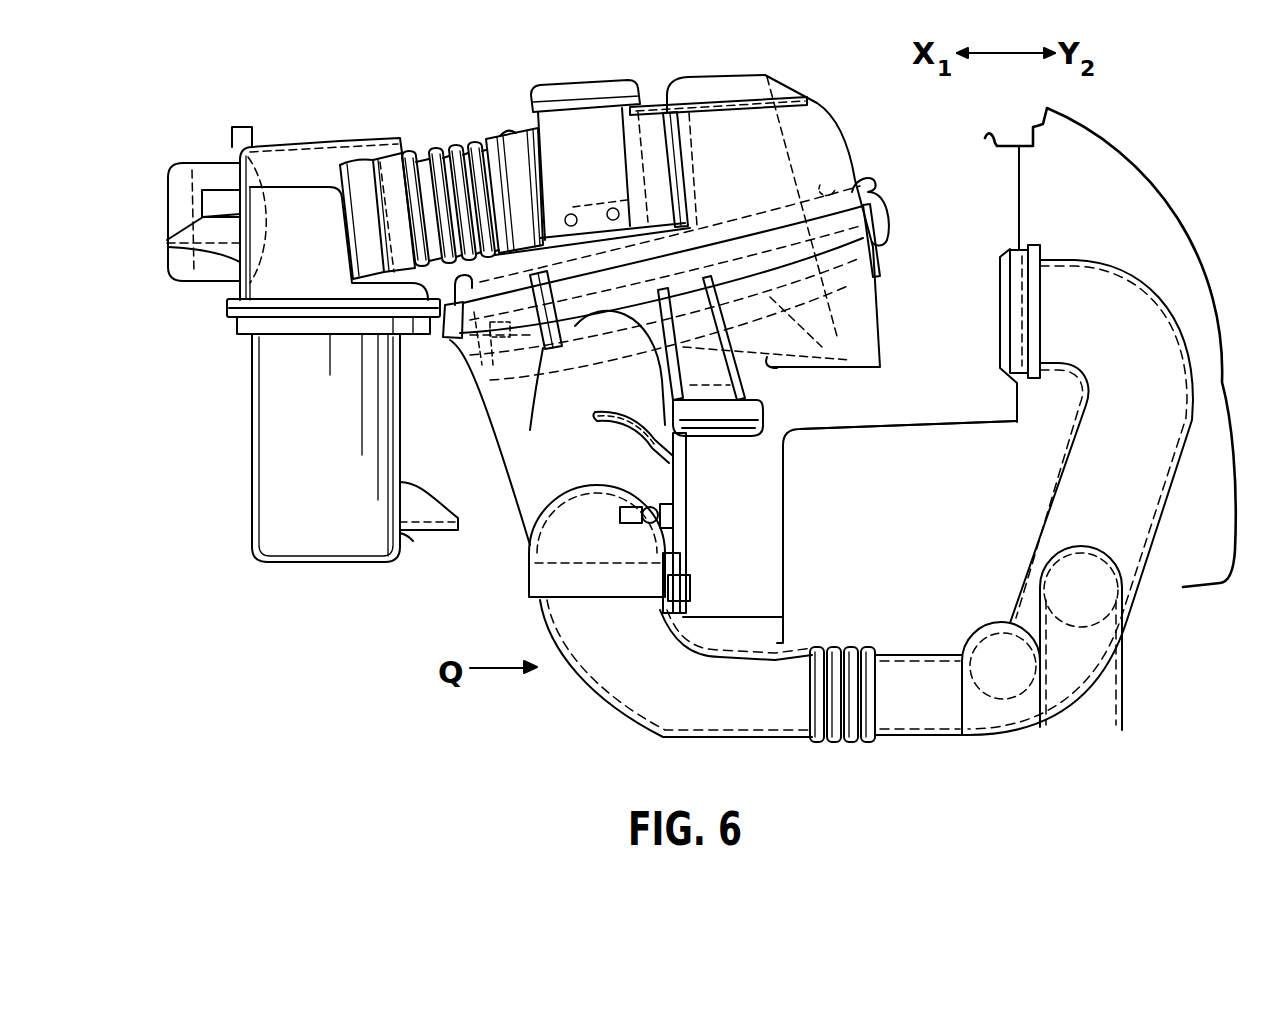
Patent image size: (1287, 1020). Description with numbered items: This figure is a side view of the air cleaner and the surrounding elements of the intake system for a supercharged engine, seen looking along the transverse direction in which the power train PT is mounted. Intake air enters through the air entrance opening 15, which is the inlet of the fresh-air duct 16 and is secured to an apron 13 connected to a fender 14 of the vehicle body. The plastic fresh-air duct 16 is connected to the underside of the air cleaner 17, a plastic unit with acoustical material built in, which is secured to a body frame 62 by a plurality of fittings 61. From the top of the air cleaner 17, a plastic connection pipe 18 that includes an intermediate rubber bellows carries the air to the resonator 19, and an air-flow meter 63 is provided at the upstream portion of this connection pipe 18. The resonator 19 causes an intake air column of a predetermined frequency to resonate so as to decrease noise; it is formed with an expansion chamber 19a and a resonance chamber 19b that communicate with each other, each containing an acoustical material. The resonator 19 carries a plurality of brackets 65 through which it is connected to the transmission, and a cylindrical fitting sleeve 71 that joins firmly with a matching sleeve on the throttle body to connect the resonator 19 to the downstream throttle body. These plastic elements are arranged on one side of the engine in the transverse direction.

The cylindrical fitting sleeve 71 is at (200, 163).
The resonator 19 is at (222, 300).
The expansion chamber 19a is at (308, 165).
The resonance chamber 19b is at (277, 492).
The connection pipe 18 is at (455, 142).
The air-flow meter 63 is at (574, 93).
The air cleaner 17 is at (840, 133).
The fittings 61 is at (760, 408).
The body frame 62 is at (787, 535).
The apron 13 is at (805, 428).
The brackets 65 is at (438, 515).
The air entrance opening 15 is at (1000, 268).
The fender 14 is at (1148, 164).
The power train PT is at (1135, 133).
The air duct 16 is at (1137, 614).